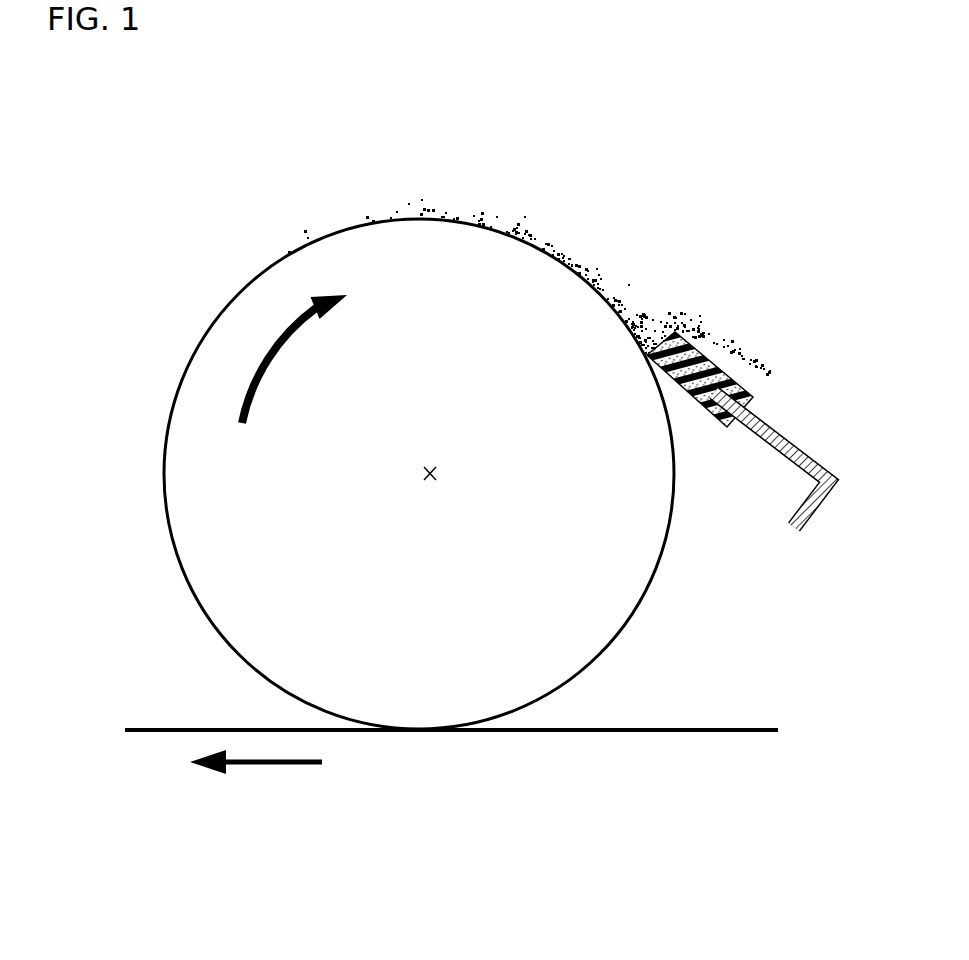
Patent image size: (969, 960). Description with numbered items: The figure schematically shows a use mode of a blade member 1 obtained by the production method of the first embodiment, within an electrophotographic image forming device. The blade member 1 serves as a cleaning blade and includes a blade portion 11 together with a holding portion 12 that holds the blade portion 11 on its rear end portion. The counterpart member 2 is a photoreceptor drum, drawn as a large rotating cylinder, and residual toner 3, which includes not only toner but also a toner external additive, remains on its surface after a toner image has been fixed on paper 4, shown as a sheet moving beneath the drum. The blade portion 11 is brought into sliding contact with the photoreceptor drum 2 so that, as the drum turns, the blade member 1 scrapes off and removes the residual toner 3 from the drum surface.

The blade member 1 is at (753, 492).
The counterpart member 2 is at (254, 277).
The residual toner 3 is at (606, 290).
The paper 4 is at (200, 728).
The blade portion 11 is at (702, 408).
The holding portion 12 is at (740, 470).